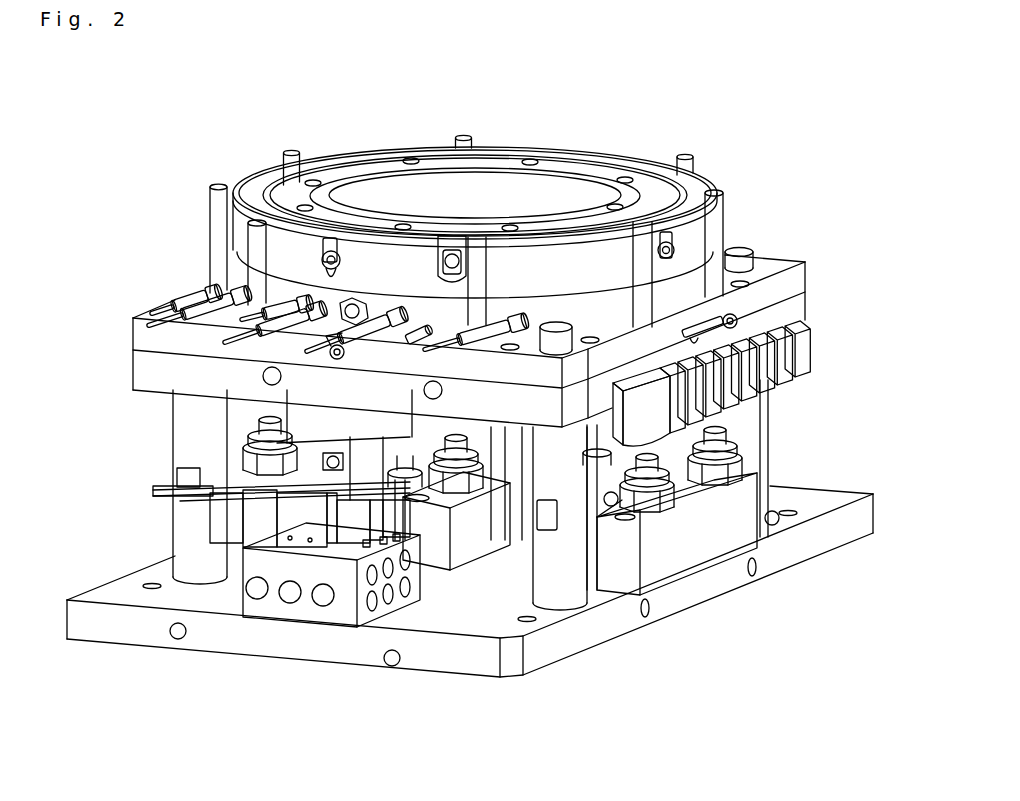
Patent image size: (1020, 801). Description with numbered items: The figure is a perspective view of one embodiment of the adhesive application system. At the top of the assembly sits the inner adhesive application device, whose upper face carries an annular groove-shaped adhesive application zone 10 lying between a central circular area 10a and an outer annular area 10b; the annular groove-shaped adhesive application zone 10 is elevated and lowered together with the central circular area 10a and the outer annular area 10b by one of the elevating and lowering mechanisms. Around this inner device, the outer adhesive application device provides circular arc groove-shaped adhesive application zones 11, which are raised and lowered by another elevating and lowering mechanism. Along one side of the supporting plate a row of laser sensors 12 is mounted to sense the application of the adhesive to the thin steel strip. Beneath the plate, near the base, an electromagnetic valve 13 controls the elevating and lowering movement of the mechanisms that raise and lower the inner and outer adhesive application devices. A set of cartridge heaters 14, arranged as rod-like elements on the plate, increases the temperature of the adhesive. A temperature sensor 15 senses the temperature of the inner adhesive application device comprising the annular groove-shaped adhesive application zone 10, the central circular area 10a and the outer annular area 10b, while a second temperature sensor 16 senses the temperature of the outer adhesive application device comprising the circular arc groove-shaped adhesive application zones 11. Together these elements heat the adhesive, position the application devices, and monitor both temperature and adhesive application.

The annular groove-shaped adhesive application zone 10 is at (603, 187).
The central circular area 10a is at (508, 190).
The outer annular area 10b is at (651, 197).
The circular arc groove-shaped adhesive application zones 11 is at (713, 198).
The laser sensors 12 is at (824, 318).
The electromagnetic valve 13 is at (300, 522).
The cartridge heaters 14 is at (345, 360).
The temperature sensor 15 is at (257, 285).
The temperature sensor 16 is at (418, 330).